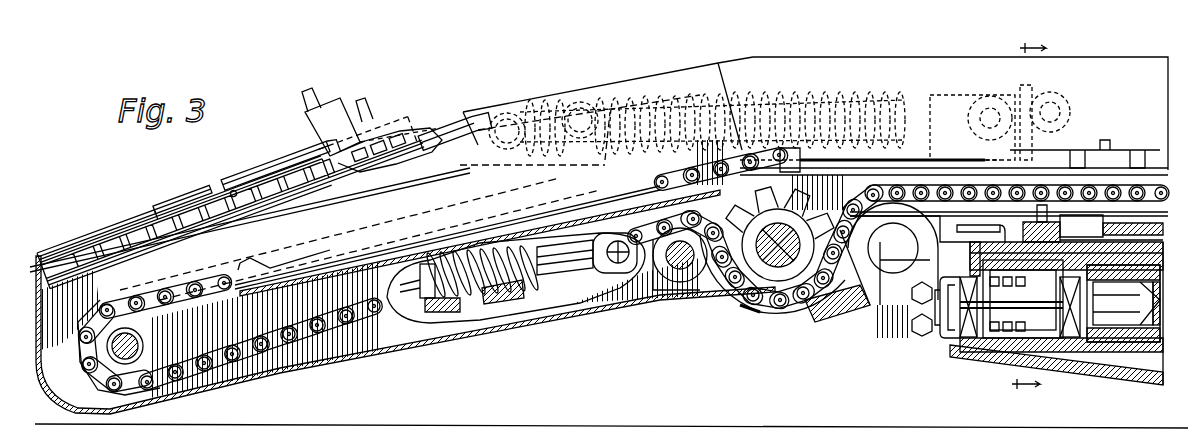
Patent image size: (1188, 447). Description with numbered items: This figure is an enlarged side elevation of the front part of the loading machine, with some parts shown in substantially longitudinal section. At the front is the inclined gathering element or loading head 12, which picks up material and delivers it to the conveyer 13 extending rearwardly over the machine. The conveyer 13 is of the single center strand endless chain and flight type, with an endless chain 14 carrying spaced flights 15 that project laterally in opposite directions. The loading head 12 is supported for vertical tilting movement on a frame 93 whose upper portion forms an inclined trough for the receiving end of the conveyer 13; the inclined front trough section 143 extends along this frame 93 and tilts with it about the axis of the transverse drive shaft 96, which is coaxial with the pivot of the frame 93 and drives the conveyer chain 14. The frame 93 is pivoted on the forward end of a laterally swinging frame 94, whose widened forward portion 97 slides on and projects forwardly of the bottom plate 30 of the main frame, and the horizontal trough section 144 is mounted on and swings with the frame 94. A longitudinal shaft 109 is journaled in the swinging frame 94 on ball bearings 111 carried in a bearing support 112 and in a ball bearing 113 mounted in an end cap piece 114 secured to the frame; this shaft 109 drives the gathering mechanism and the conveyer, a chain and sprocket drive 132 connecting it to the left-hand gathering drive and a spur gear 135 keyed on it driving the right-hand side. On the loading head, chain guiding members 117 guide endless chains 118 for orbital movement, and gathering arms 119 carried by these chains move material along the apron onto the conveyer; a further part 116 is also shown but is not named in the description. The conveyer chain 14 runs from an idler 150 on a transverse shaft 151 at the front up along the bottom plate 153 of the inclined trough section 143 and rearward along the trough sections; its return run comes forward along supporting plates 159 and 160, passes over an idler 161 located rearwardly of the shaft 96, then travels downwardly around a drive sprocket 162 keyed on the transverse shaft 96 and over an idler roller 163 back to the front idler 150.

The gathering element 12 is at (226, 190).
The conveyer 13 is at (1015, 217).
The endless chain 14 is at (338, 327).
The flights 15 is at (242, 264).
The bottom plate 30 is at (1160, 386).
The frame 93 is at (547, 330).
The laterally swinging frame 94 is at (990, 368).
The transverse drive shaft 96 is at (745, 312).
The widened forward portion 97 is at (985, 353).
The longitudinal shaft 109 is at (1118, 380).
The ball bearings 111 is at (1068, 366).
The bearing support 112 is at (1108, 380).
The ball bearing 113 is at (950, 348).
The end cap piece 114 is at (923, 340).
The clamp bar 116 is at (460, 130).
The chain guiding members 117 is at (152, 225).
The endless chains 118 is at (86, 240).
The gathering arms 119 is at (340, 128).
The chain and sprocket drive 132 is at (1000, 360).
The spur gear 135 is at (1040, 368).
The inclined front trough section 143 is at (571, 103).
The horizontal trough section 144 is at (870, 60).
The idler 150 is at (215, 372).
The transverse shaft 151 is at (160, 372).
The bottom plate 153 is at (305, 270).
The supporting plate 159 is at (1108, 172).
The supporting plate 160 is at (931, 160).
The idler 161 is at (835, 322).
The drive sprocket 162 is at (772, 206).
The idler roller 163 is at (678, 283).